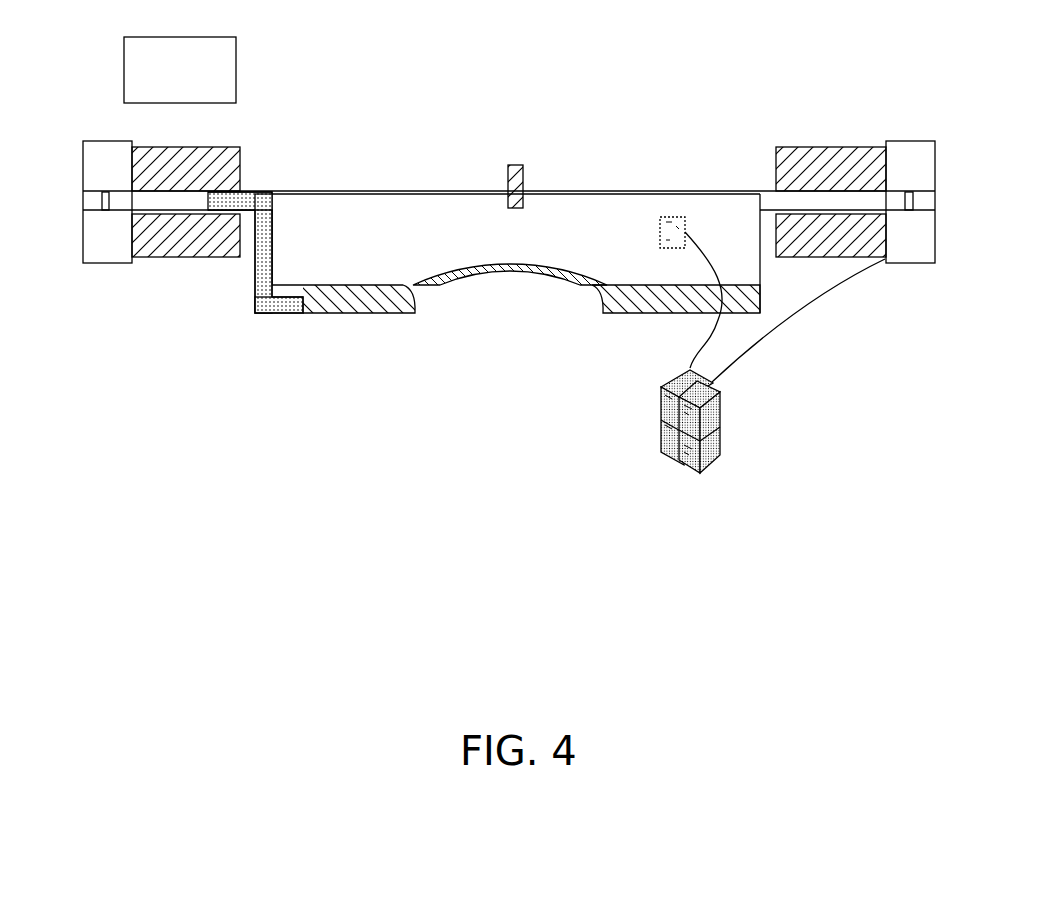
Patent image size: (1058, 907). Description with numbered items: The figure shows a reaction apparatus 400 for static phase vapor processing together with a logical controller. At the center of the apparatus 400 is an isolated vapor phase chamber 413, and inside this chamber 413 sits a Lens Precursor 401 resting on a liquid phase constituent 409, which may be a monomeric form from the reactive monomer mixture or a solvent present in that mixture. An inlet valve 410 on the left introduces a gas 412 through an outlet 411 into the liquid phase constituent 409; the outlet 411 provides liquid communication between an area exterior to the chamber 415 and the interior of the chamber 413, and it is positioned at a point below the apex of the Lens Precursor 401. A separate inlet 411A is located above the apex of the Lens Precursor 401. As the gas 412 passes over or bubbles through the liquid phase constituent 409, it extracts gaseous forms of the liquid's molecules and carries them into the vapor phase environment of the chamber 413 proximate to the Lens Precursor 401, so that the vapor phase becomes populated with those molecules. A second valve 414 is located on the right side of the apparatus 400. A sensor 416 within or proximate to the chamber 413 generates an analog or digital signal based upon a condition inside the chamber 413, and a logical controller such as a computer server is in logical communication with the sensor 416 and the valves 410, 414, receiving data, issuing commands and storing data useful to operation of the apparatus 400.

The reaction apparatus 400 is at (463, 58).
The Lens Precursor 401 is at (518, 273).
The liquid phase constituent 409 is at (383, 313).
The inlet valve 410 is at (102, 263).
The outlet 411 is at (287, 315).
The inlet 411A is at (511, 208).
The gas 412 is at (303, 307).
The vapor phase chamber 413 is at (622, 236).
The valve 414 is at (912, 248).
The area exterior to the chamber 415 is at (83, 211).
The sensor 416 is at (750, 202).